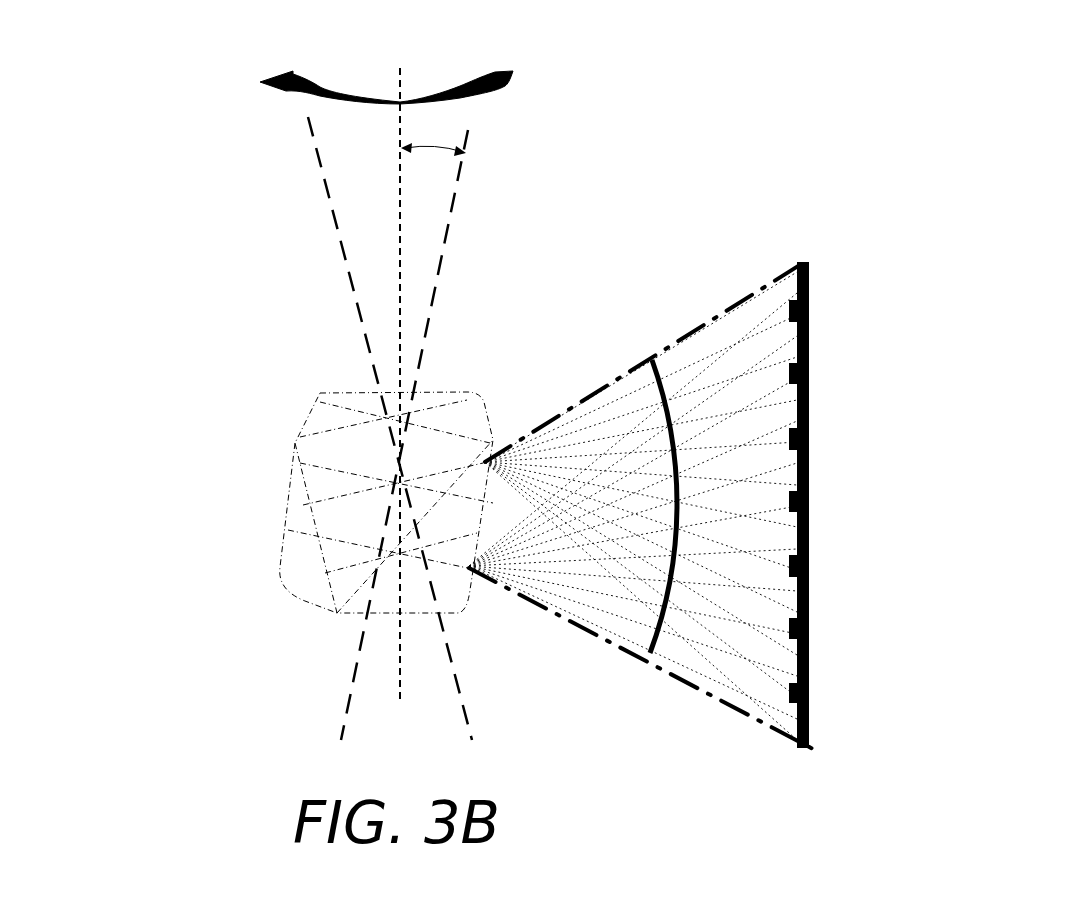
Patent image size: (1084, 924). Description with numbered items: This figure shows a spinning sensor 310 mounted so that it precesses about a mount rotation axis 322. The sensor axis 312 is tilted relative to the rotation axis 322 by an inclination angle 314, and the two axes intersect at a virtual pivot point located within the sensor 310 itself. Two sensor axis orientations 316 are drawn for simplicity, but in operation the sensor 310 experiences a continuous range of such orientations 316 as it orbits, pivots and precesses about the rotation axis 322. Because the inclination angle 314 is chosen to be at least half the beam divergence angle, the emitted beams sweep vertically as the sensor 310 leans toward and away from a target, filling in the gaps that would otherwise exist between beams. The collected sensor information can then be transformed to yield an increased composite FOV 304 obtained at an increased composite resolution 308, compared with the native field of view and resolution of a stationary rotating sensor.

The increased composite FOV 304 is at (657, 388).
The increased composite resolution 308 is at (808, 438).
The sensor 310 is at (320, 415).
The sensor axis 312 is at (317, 150).
The inclination angle 314 is at (433, 145).
The sensor axis orientations 316 is at (290, 88).
The mount rotation axis 322 is at (402, 88).